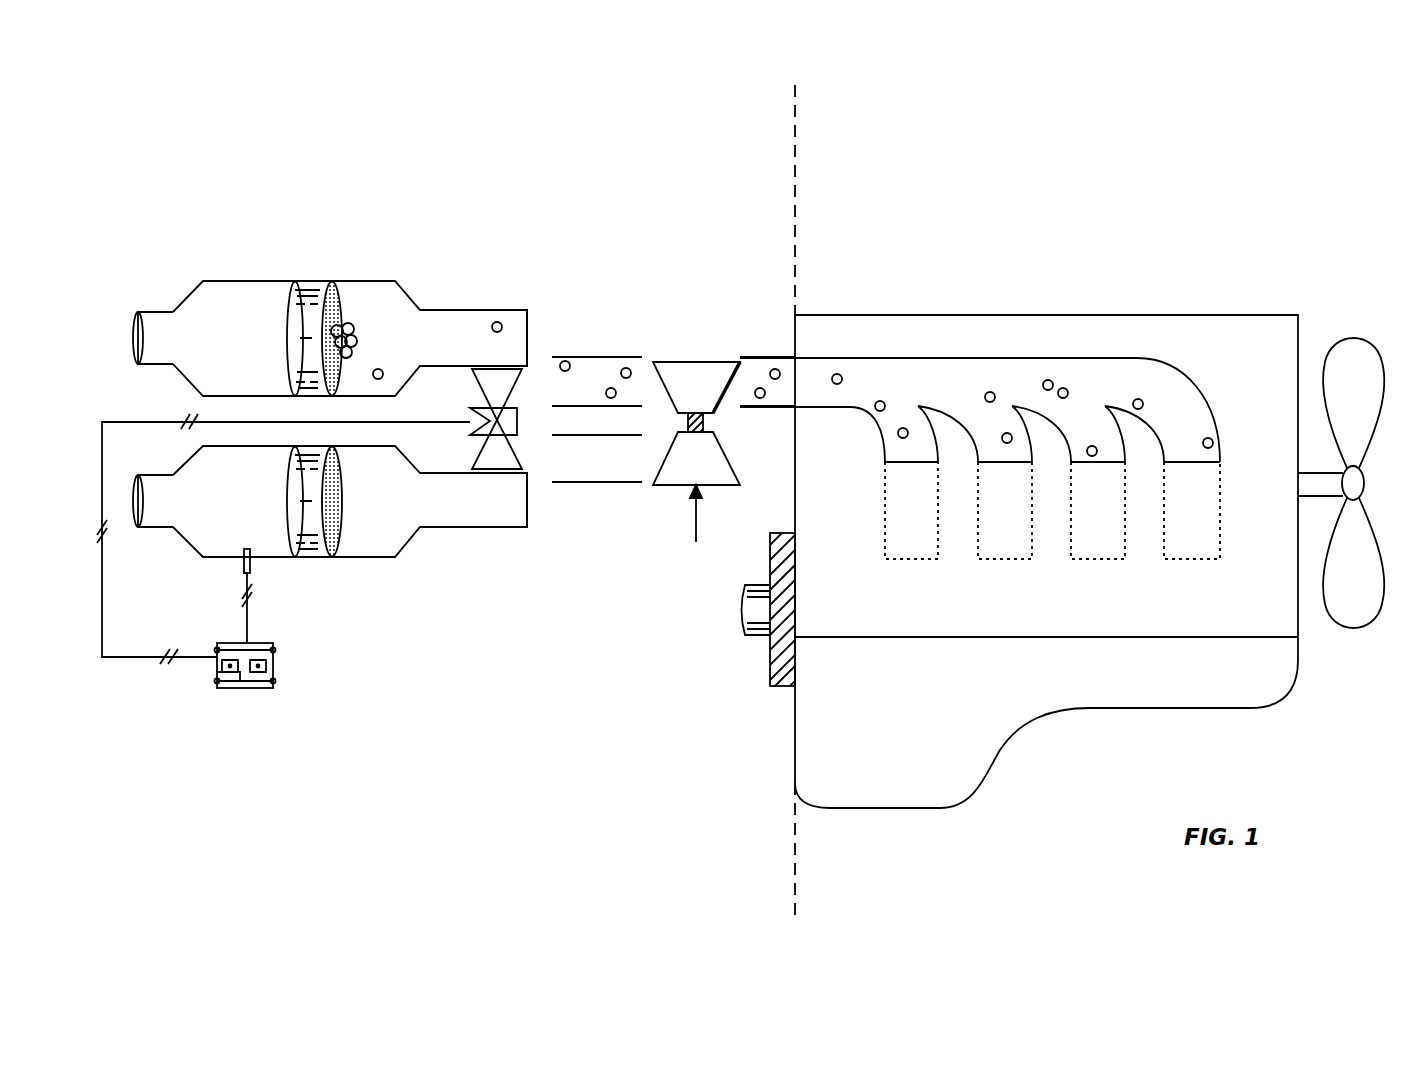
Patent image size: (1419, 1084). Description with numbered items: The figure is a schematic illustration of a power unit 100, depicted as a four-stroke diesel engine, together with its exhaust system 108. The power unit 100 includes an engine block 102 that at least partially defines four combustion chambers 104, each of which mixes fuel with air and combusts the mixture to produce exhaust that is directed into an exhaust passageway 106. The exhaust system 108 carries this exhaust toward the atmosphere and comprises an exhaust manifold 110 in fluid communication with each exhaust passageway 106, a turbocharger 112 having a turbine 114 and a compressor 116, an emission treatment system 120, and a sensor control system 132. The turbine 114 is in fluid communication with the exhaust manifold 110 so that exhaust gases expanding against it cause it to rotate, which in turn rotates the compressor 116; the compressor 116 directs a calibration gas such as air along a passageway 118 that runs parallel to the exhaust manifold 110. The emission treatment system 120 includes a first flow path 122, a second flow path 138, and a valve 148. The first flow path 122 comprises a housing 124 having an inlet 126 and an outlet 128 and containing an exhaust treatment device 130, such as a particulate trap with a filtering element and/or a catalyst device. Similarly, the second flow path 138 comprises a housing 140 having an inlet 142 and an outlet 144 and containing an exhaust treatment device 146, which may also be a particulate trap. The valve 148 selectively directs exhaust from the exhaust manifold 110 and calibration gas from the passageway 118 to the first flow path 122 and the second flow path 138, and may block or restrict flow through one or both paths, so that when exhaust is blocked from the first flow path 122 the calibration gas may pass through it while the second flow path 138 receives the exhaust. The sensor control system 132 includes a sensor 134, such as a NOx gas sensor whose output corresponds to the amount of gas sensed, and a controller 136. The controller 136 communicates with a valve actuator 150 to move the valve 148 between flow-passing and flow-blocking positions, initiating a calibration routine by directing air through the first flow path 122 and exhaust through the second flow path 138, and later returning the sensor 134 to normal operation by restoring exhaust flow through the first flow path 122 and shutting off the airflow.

The power unit 100 is at (970, 172).
The engine block 102 is at (1075, 315).
The combustion chambers 104 is at (917, 559).
The exhaust passageway 106 is at (850, 420).
The exhaust system 108 is at (695, 182).
The exhaust manifold 110 is at (598, 357).
The turbocharger 112 is at (676, 423).
The turbine 114 is at (706, 360).
The compressor 116 is at (742, 480).
The passageway 118 is at (580, 482).
The emission treatment system 120 is at (298, 185).
The first flow path 122 is at (400, 572).
The housing 124 is at (345, 557).
The inlet 126 is at (470, 527).
The outlet 128 is at (160, 527).
The exhaust treatment device 130 is at (345, 492).
The sensor control system 132 is at (212, 612).
The sensor 134 is at (251, 560).
The controller 136 is at (275, 668).
The second flow path 138 is at (412, 278).
The housing 140 is at (340, 281).
The inlet 142 is at (483, 310).
The outlet 144 is at (158, 312).
The exhaust treatment device 146 is at (345, 300).
The valve 148 is at (522, 400).
The valve actuator 150 is at (517, 421).